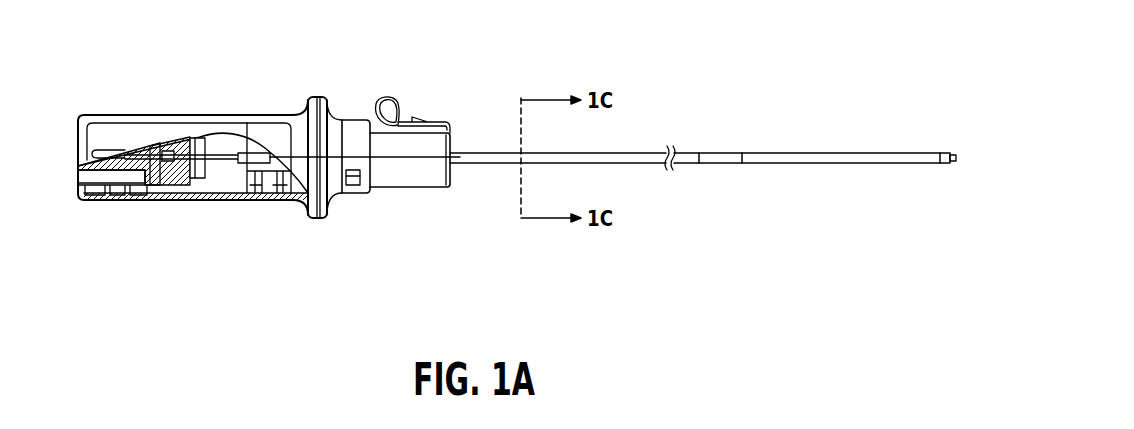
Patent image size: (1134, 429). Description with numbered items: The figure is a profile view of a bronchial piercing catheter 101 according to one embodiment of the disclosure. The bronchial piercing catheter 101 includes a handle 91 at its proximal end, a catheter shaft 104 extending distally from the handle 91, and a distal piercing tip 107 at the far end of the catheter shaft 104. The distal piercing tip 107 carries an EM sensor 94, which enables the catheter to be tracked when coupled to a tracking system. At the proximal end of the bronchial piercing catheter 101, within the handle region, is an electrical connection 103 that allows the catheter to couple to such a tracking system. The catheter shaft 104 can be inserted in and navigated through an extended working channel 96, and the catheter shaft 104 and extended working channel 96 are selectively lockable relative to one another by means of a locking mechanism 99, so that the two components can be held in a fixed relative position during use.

The electrical connection 103 is at (78, 200).
The bronchial piercing catheter 101 is at (232, 215).
The handle 91 is at (317, 230).
The catheter shaft 104 is at (597, 152).
The locking mechanism 99 is at (722, 152).
The extended working channel 96 is at (840, 152).
The EM sensor 94 is at (945, 166).
The distal piercing tip 107 is at (950, 150).